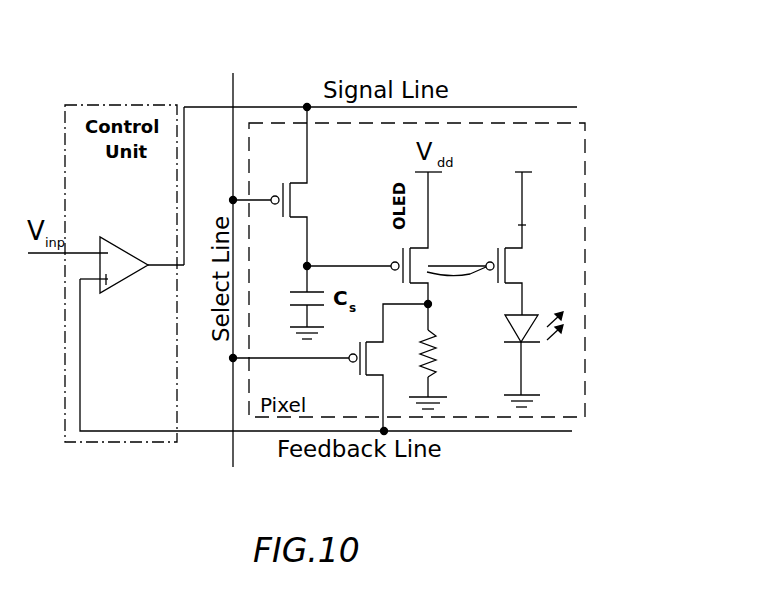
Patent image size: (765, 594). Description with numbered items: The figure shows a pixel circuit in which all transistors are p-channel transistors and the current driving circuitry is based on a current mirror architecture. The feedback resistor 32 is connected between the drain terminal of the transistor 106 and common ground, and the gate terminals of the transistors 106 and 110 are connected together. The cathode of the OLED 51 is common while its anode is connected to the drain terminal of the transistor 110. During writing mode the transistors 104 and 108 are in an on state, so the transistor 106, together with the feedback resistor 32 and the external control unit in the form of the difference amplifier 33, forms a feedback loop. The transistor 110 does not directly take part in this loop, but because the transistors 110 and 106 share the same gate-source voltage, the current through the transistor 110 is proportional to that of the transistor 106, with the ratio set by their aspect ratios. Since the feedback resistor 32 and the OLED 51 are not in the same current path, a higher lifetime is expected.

The difference amplifier 33 is at (103, 240).
The transistor 104 is at (328, 208).
The transistor 106 is at (495, 268).
The transistor 108 is at (395, 362).
The transistor 110 is at (527, 268).
The feedback resistor 32 is at (435, 338).
The OLED 51 is at (523, 325).